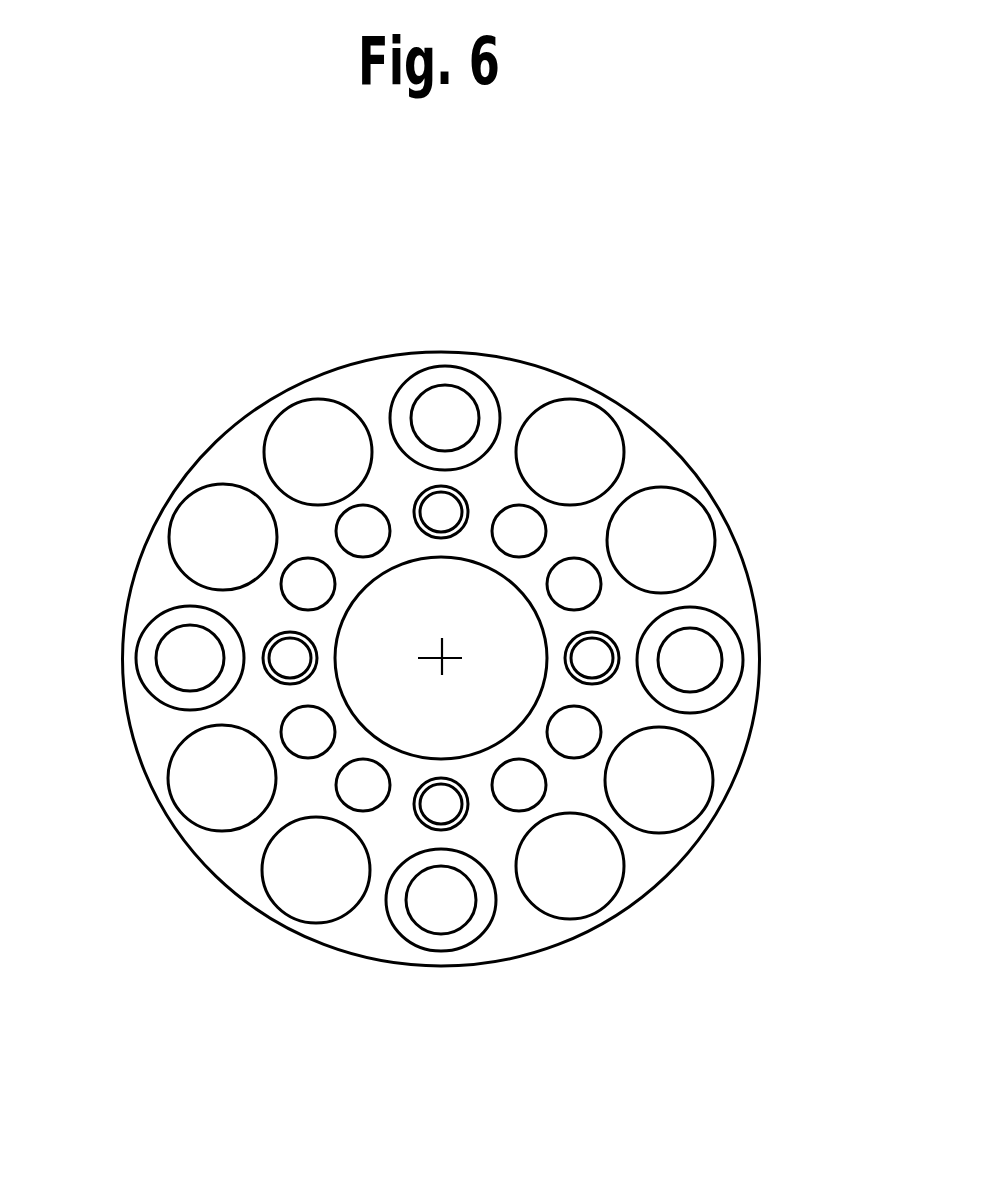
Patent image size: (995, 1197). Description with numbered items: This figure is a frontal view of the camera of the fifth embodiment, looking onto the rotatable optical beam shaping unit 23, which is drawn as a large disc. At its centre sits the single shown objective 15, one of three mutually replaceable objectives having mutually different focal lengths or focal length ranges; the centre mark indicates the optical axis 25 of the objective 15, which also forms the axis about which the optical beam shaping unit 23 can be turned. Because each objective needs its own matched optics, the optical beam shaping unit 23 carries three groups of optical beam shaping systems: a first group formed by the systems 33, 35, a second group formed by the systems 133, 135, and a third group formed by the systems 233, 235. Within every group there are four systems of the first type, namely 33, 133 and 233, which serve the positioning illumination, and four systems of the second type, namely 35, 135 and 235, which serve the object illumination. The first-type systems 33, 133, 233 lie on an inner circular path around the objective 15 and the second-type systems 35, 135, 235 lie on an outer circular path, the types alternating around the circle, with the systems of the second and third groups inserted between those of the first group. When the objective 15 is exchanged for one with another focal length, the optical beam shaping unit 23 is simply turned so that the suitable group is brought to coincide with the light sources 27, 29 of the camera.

The objective 15 is at (420, 639).
The optical beam shaping unit 23 is at (337, 337).
The optical axis 25 is at (442, 660).
The light source 27 is at (280, 656).
The light source 29 is at (710, 653).
The optical beam shaping system of the first type 33 is at (268, 663).
The optical beam shaping system of the second type 35 is at (802, 485).
The optical beam shaping system of the first type 133 is at (300, 580).
The optical beam shaping system of the second type 135 is at (582, 425).
The optical beam shaping system of the first type 233 is at (360, 523).
The optical beam shaping system of the second type 235 is at (677, 517).